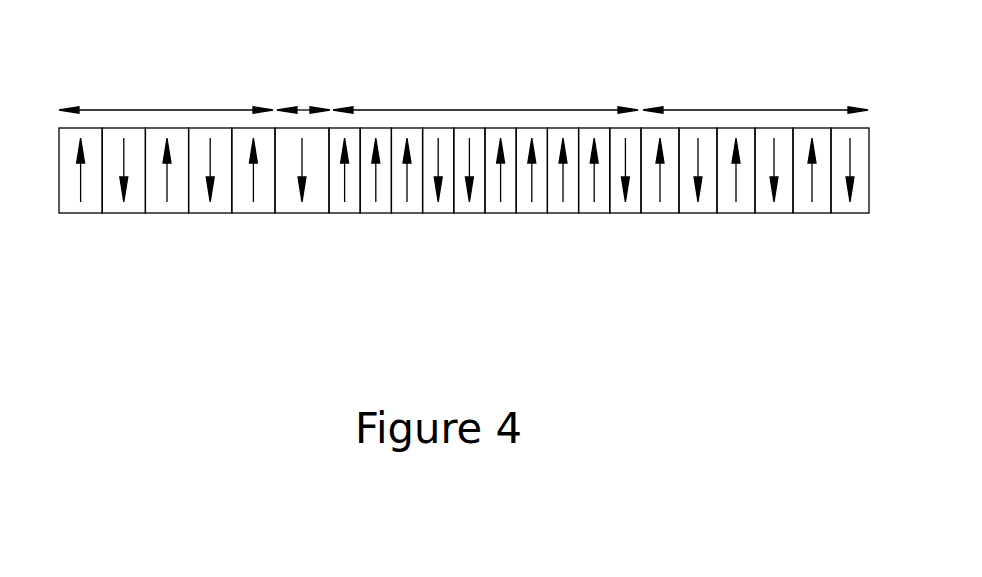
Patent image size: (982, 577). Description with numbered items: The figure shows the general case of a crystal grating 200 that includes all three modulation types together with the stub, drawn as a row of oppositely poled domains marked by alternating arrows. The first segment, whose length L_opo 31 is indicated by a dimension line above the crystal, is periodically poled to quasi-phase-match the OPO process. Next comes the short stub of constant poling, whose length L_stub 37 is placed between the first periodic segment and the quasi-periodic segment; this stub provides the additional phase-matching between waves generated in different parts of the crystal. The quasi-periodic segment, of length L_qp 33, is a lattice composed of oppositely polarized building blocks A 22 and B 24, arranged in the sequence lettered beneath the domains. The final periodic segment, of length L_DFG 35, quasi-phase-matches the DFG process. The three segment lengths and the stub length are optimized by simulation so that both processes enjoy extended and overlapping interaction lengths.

The periodically poled waveguide structure 200 is at (773, 348).
The length of the first segment 31 is at (118, 108).
The length of the stub 37 is at (316, 82).
The length of the quasi-periodic segment 33 is at (428, 108).
The length of the periodic segment which quasi-phase-matches the DFG process 35 is at (698, 108).
The building block A 22 is at (340, 231).
The building block B 24 is at (438, 231).